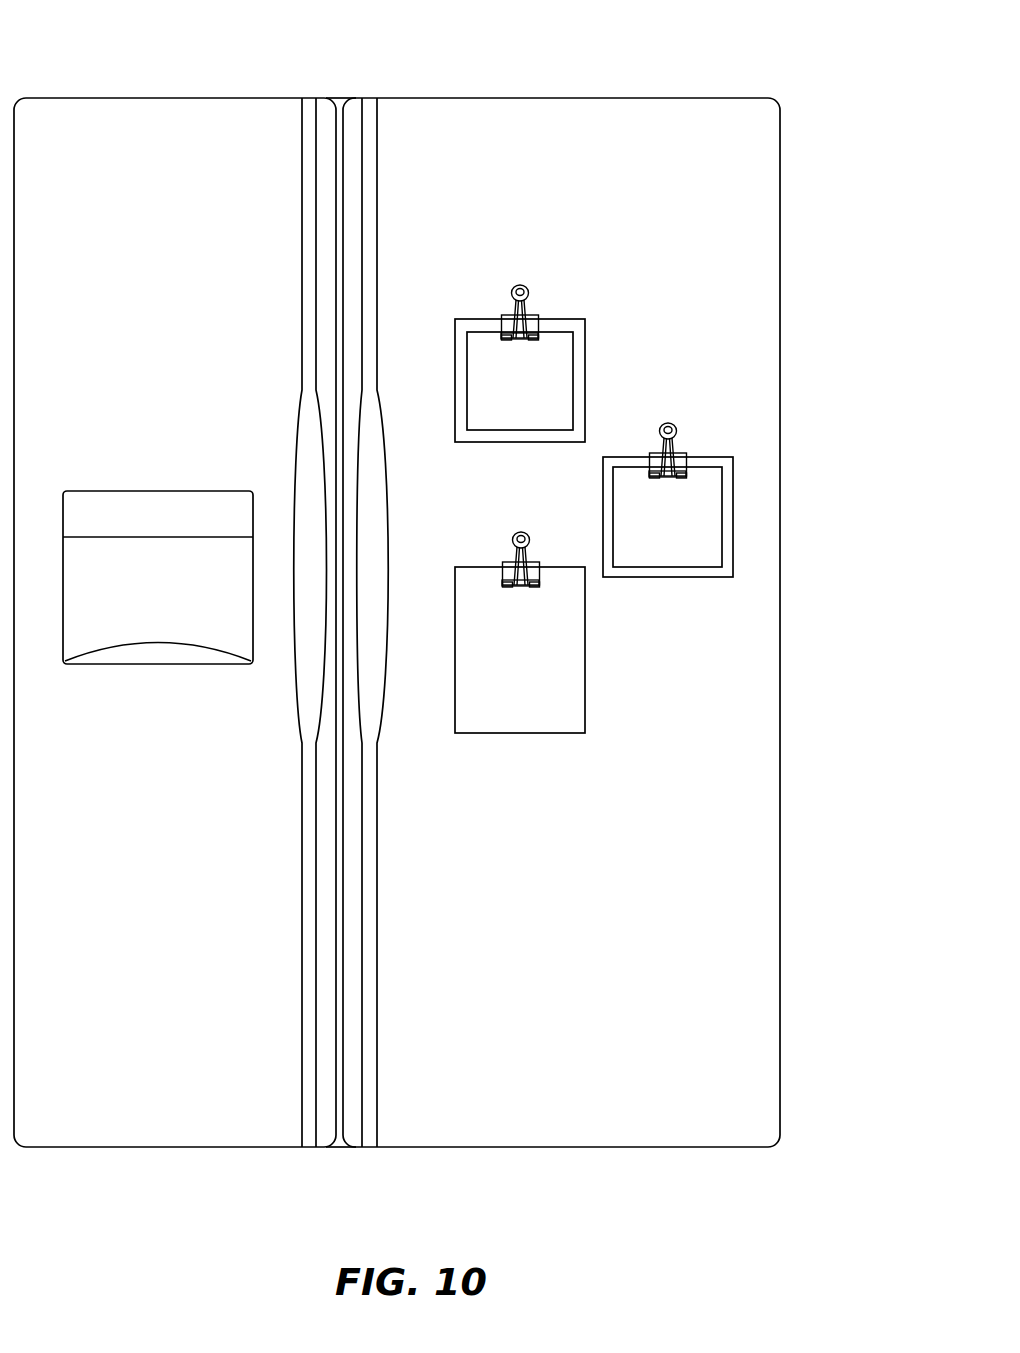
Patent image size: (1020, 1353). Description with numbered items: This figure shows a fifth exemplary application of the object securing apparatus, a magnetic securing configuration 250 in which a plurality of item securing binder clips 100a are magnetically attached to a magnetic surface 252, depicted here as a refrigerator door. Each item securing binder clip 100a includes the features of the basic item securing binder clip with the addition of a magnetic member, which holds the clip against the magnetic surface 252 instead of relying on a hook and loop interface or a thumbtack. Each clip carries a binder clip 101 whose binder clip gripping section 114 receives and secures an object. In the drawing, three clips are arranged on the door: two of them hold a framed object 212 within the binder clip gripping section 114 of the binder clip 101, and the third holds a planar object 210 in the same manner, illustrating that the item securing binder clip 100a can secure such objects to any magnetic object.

The magnetic securing configuration 250 is at (448, 574).
The magnetic surface 252 is at (762, 760).
The item securing binder clip 100a is at (626, 434).
The binder clip 101 is at (501, 309).
The binder clip gripping section 114 is at (546, 343).
The framed object 212 is at (517, 436).
The planar object 210 is at (518, 727).